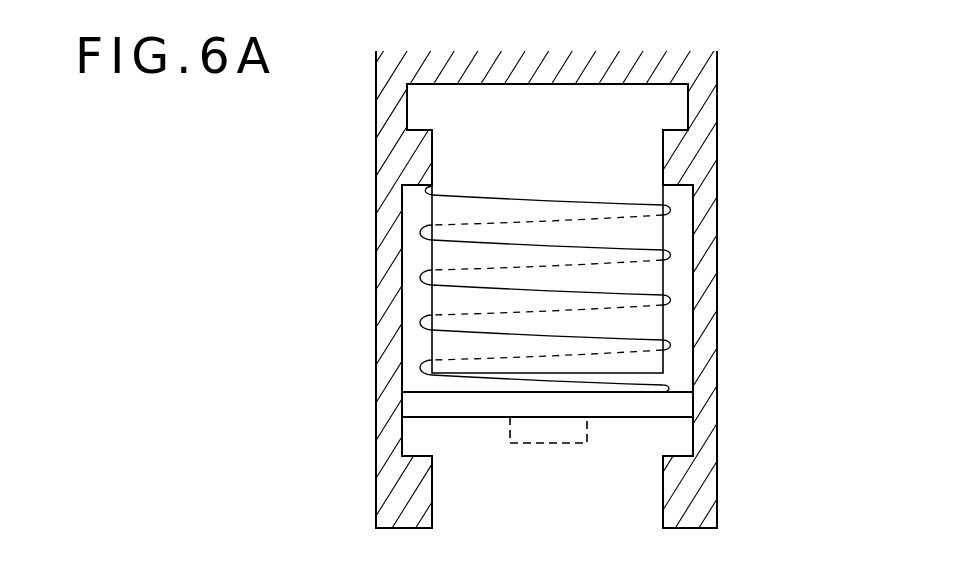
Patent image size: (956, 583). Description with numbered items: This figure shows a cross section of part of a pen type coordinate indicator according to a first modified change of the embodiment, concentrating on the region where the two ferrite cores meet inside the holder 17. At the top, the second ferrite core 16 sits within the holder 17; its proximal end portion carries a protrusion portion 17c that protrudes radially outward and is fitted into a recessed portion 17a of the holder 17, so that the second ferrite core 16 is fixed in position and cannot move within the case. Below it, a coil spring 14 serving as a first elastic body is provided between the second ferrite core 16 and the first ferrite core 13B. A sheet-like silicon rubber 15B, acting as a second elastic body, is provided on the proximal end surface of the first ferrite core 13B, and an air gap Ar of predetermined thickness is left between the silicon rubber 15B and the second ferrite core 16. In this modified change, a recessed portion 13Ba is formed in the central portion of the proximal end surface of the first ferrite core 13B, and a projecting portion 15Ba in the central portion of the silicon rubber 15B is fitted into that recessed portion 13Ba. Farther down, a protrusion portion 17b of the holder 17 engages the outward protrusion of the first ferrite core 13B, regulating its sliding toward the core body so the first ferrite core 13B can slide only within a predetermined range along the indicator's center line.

The second ferrite core 16 is at (513, 104).
The holder 17 is at (690, 63).
The recessed portion 17a is at (406, 105).
The protrusion portion 17b is at (413, 493).
The protrusion portion 17c is at (408, 154).
The coil spring 14 is at (667, 252).
The silicon rubber 15B is at (677, 402).
The projecting portion 15Ba is at (567, 437).
The first ferrite core 13B is at (485, 440).
The recessed portion 13Ba is at (558, 443).
The air gap Ar is at (467, 383).